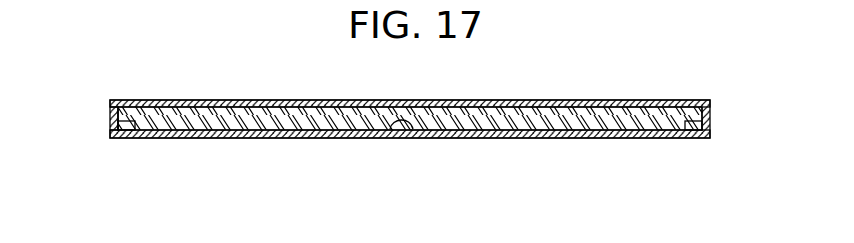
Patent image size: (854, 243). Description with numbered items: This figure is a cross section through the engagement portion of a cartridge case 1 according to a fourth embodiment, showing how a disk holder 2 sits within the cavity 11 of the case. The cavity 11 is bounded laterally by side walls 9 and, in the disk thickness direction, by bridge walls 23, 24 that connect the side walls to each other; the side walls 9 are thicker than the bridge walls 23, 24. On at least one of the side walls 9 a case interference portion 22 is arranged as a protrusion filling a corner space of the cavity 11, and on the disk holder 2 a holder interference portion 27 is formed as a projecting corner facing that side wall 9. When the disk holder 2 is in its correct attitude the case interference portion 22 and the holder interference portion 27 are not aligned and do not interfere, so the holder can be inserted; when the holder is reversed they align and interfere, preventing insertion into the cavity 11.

The cartridge case 1 is at (703, 122).
The disk holder 2 is at (628, 130).
The side wall 9 is at (113, 122).
The cavity 11 is at (404, 128).
The case interference portion 22 is at (112, 100).
The bridge wall 23 is at (530, 100).
The bridge wall 24 is at (260, 138).
The holder interference portion 27 is at (135, 138).